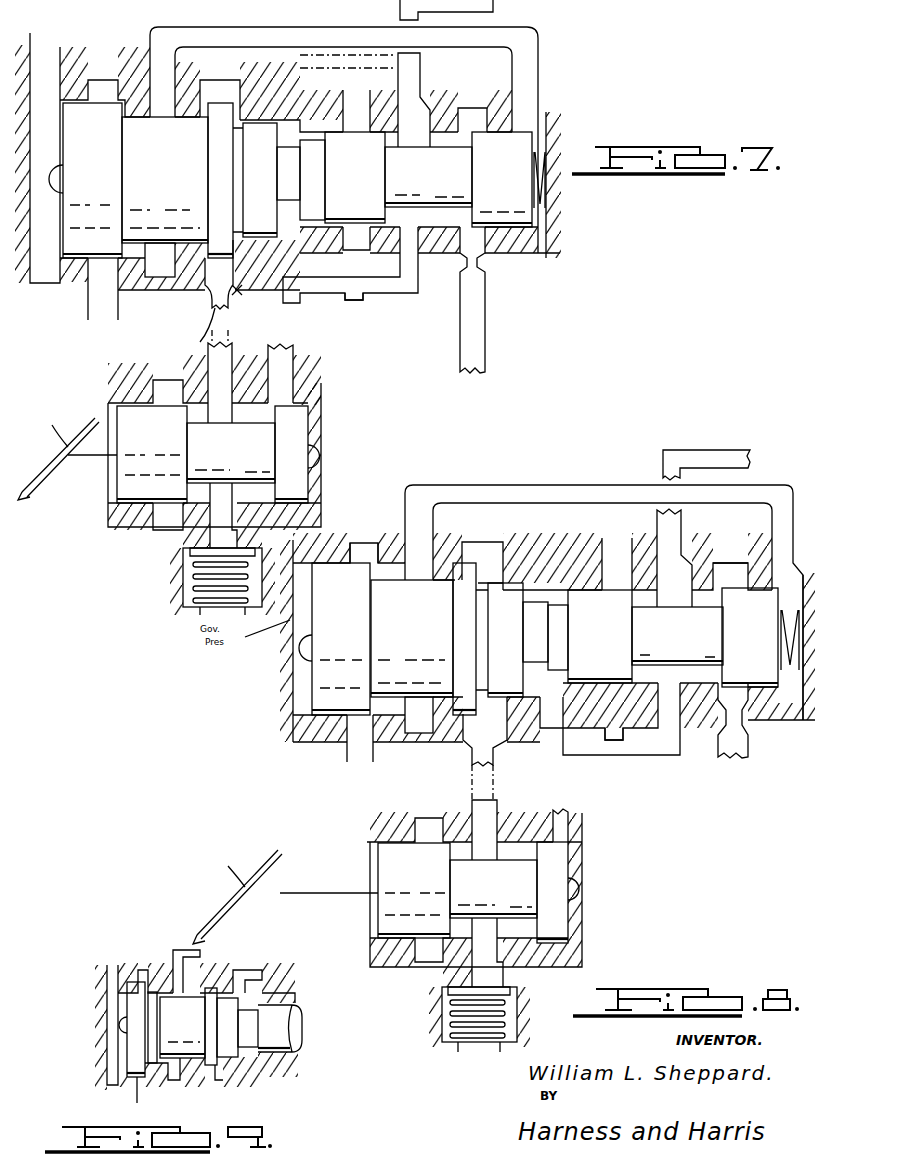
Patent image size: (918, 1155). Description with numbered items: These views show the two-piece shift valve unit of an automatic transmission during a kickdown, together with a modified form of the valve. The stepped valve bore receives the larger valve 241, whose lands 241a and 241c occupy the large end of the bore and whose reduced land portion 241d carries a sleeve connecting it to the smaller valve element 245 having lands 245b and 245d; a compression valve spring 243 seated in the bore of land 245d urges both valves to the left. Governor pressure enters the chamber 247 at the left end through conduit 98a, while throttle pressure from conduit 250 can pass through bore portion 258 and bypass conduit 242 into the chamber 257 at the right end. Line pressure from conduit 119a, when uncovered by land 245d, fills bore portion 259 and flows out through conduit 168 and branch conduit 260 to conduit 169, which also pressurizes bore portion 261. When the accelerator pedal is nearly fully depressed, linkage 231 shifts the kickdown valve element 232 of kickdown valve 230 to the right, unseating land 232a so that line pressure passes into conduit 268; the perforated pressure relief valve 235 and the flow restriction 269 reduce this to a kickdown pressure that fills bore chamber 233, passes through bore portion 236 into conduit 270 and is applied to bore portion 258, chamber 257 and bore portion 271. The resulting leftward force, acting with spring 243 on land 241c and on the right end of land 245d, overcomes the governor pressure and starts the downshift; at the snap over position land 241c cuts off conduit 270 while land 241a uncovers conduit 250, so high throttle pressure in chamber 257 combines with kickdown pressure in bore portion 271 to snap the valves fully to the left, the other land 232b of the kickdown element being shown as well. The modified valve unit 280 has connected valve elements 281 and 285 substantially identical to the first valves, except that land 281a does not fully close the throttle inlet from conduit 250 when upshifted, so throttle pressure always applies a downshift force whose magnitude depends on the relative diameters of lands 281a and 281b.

In FIG. 7, the conduit 98a is at (50, 50).
In FIG. 8, the conduit 98a is at (320, 556).
In FIG. 9, the conduit 98a is at (105, 972).
In FIG. 7, the line pressure supply conduit 119a is at (483, 354).
In FIG. 8, the line pressure supply conduit 119a is at (724, 762).
In FIG. 7, the conduit 168 is at (420, 72).
In FIG. 8, the conduit 168 is at (718, 455).
In FIG. 7, the conduit 169 is at (263, 70).
In FIG. 8, the conduit 169 is at (482, 566).
In FIG. 7, the kickdown valve 230 is at (330, 430).
In FIG. 8, the kickdown valve 230 is at (598, 870).
In FIG. 7, the linkage 231 is at (98, 462).
In FIG. 8, the linkage 231 is at (300, 893).
In FIG. 7, the kickdown valve element 232 is at (262, 458).
In FIG. 8, the kickdown valve element 232 is at (525, 893).
In FIG. 7, the valve land 232a is at (310, 480).
In FIG. 8, the valve land 232a is at (575, 926).
In FIG. 7, the valve land 232b is at (130, 500).
In FIG. 8, the valve land 232b is at (385, 935).
In FIG. 7, the bore chamber 233 is at (325, 388).
In FIG. 8, the bore chamber 233 is at (588, 840).
In FIG. 7, the perforated pressure relief valve 235 is at (185, 575).
In FIG. 8, the perforated pressure relief valve 235 is at (453, 1000).
In FIG. 7, the valve bore portion 236 is at (282, 385).
In FIG. 8, the valve bore portion 236 is at (490, 850).
In FIG. 7, the valve 241 is at (180, 193).
In FIG. 8, the valve 241 is at (432, 651).
In FIG. 7, the valve land 241a is at (110, 215).
In FIG. 8, the valve land 241a is at (315, 668).
In FIG. 7, the valve land 241c is at (207, 133).
In FIG. 8, the valve land 241c is at (460, 548).
In FIG. 7, the land portion 241d is at (326, 130).
In FIG. 8, the land portion 241d is at (522, 585).
In FIG. 7, the bypass conduit 242 is at (333, 30).
In FIG. 9, the bypass conduit 242 is at (200, 960).
In FIG. 7, the valve spring 243 is at (550, 140).
In FIG. 7, the valve element 245 is at (460, 178).
In FIG. 8, the valve element 245 is at (690, 643).
In FIG. 7, the valve land 245b is at (300, 250).
In FIG. 8, the valve land 245b is at (592, 580).
In FIG. 7, the valve land 245d is at (522, 135).
In FIG. 8, the valve land 245d is at (752, 595).
In FIG. 8, the valve bore chamber 247 is at (312, 708).
In FIG. 7, the conduit 250 is at (88, 310).
In FIG. 8, the conduit 250 is at (347, 750).
In FIG. 9, the conduit 250 is at (148, 1100).
In FIG. 7, the valve bore chamber 257 is at (548, 226).
In FIG. 8, the valve bore chamber 257 is at (775, 679).
In FIG. 7, the valve bore portion 258 is at (133, 255).
In FIG. 8, the valve bore portion 258 is at (405, 552).
In FIG. 7, the valve bore portion 259 is at (455, 222).
In FIG. 7, the branch conduit 260 is at (305, 27).
In FIG. 7, the bore portion 261 is at (250, 258).
In FIG. 7, the conduit 268 is at (395, 298).
In FIG. 8, the conduit 268 is at (562, 748).
In FIG. 7, the flow restriction 269 is at (358, 293).
In FIG. 8, the flow restriction 269 is at (612, 752).
In FIG. 7, the conduit 270 is at (208, 350).
In FIG. 8, the conduit 270 is at (495, 762).
In FIG. 7, the bore portion 271 is at (237, 291).
In FIG. 8, the bore portion 271 is at (507, 728).
In FIG. 9, the valve unit 280 is at (105, 1034).
In FIG. 9, the valve element 281 is at (205, 1033).
In FIG. 9, the valve land 281a is at (125, 998).
In FIG. 9, the valve land 281b is at (160, 990).
In FIG. 9, the valve element 285 is at (302, 1043).